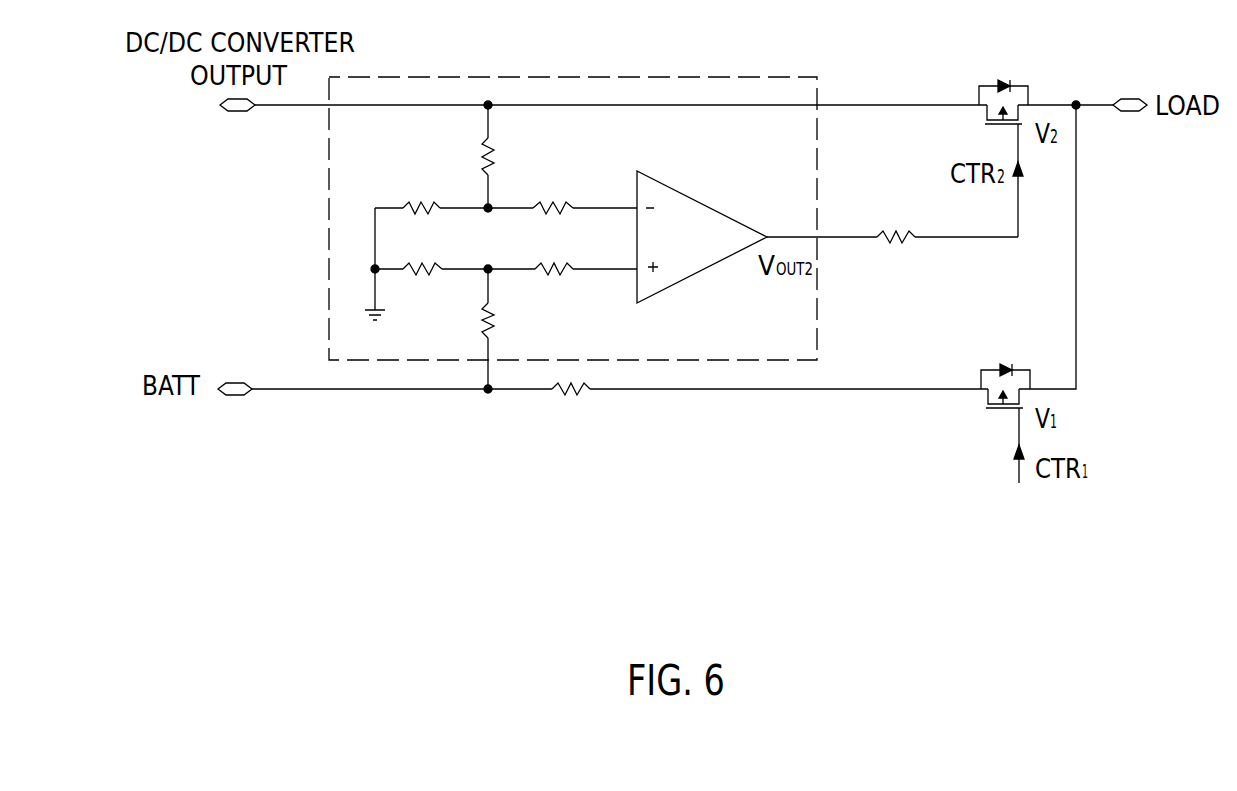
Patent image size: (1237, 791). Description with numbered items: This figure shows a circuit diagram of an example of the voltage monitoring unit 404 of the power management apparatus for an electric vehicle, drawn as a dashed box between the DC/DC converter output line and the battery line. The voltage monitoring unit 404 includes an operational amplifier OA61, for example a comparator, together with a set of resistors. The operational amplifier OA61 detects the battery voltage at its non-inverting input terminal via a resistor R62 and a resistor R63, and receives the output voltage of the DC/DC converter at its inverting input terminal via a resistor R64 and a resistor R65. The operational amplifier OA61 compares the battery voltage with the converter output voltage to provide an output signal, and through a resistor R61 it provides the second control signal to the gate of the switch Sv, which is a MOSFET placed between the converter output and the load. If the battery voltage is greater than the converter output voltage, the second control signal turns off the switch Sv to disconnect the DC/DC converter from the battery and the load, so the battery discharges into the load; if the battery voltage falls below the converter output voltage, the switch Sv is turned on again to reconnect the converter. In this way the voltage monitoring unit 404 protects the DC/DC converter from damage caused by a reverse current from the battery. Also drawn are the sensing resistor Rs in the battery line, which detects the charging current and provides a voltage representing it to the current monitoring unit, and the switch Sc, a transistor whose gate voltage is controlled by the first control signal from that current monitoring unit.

The voltage monitoring unit 404 is at (583, 77).
The resistor R61 is at (897, 220).
The resistor R62 is at (512, 321).
The resistor R63 is at (564, 252).
The resistor R64 is at (512, 156).
The resistor R65 is at (562, 193).
The sensing resistor Rs is at (571, 408).
The operational amplifier OA61 is at (702, 237).
The switch Sv is at (1003, 142).
The switch Sc is at (1005, 407).